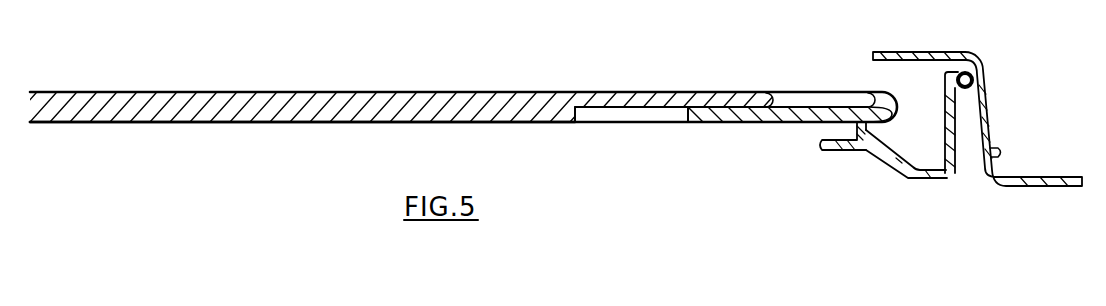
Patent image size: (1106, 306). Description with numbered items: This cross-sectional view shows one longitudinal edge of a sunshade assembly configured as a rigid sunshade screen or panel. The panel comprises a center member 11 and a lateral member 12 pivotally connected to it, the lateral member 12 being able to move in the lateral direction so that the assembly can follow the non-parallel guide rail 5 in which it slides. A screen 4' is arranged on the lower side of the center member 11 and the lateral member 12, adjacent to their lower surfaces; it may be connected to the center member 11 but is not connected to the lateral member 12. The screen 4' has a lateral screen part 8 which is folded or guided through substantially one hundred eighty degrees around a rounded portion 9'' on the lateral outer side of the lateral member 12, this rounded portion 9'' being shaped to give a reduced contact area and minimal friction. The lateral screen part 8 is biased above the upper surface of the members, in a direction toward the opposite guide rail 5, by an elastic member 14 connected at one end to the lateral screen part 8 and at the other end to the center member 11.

The elastic member 14 is at (158, 91).
The screen 4' is at (302, 160).
The lateral screen part 8 is at (592, 92).
The center member 11 is at (550, 108).
The lateral member 12 is at (732, 115).
The rounded portion 9'' is at (883, 171).
The guide rail 5 is at (947, 175).